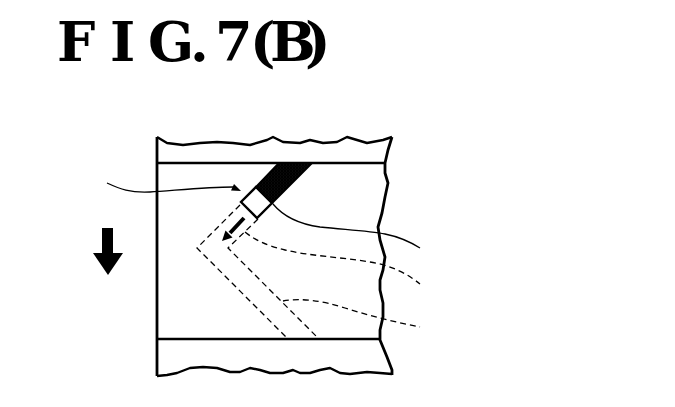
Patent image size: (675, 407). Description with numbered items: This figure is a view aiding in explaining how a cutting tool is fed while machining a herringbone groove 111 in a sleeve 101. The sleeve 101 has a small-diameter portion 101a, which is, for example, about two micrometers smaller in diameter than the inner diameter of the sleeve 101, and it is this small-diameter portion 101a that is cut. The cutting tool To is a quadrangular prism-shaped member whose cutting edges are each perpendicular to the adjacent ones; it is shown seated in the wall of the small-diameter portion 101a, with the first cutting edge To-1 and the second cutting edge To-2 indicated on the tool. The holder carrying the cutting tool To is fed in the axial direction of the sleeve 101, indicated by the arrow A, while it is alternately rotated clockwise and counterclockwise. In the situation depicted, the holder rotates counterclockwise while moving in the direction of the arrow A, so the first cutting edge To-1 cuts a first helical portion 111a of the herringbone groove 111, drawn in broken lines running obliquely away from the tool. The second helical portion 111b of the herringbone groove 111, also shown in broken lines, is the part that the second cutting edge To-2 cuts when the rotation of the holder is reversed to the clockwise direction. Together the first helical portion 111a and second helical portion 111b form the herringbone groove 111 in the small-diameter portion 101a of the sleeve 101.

The sleeve 101 is at (361, 139).
The small-diameter portion 101a is at (366, 176).
The herringbone groove 111 is at (299, 188).
The first helical portion 111a is at (335, 271).
The second helical portion 111b is at (351, 281).
The cutting tool To is at (160, 179).
The first cutting edge To-1 is at (222, 223).
The second cutting edge To-2 is at (371, 238).
The axial direction arrow A is at (101, 248).